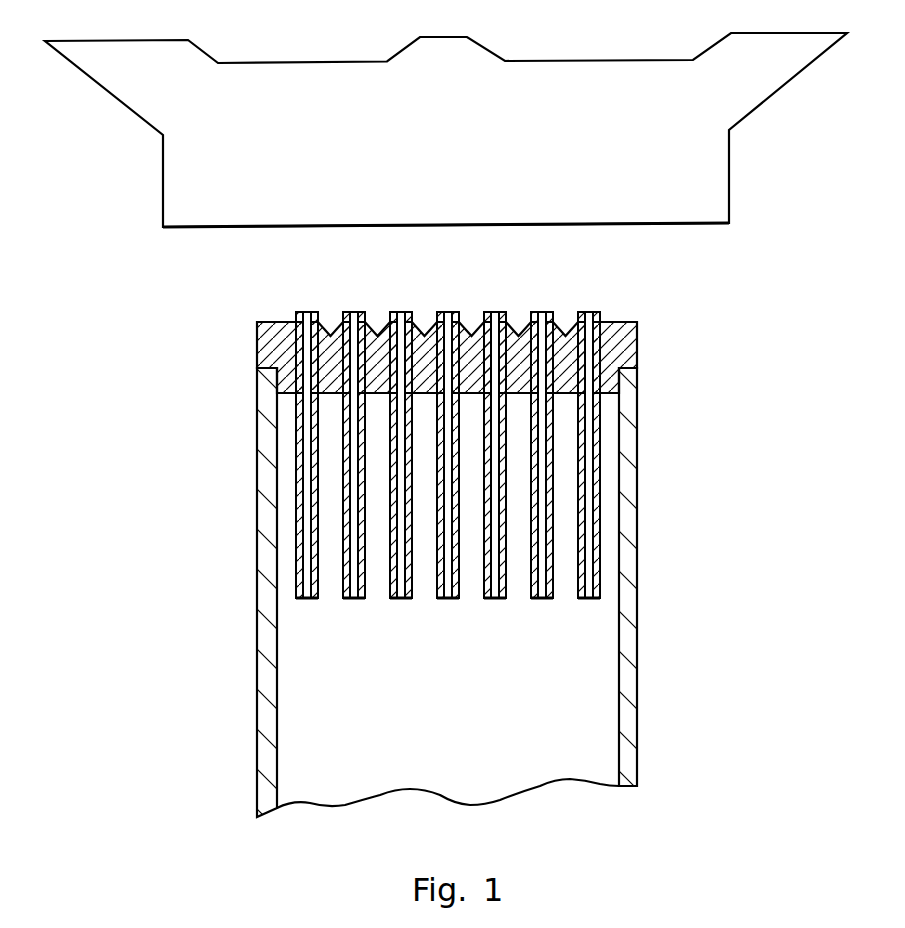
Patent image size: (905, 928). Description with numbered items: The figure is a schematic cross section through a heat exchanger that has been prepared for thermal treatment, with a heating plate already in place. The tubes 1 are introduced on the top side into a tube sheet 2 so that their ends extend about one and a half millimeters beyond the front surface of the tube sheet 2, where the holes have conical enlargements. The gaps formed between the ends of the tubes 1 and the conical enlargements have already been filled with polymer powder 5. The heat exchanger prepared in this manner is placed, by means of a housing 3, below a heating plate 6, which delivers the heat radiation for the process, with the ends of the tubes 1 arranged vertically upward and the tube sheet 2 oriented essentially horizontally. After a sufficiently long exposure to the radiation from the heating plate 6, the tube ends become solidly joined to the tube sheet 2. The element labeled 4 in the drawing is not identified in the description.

The tubes 1 is at (590, 515).
The tube sheet 2 is at (637, 348).
The housing 3 is at (630, 730).
The sleeve 4 is at (298, 364).
The polymer powder 5 is at (602, 322).
The heating plate 6 is at (700, 190).